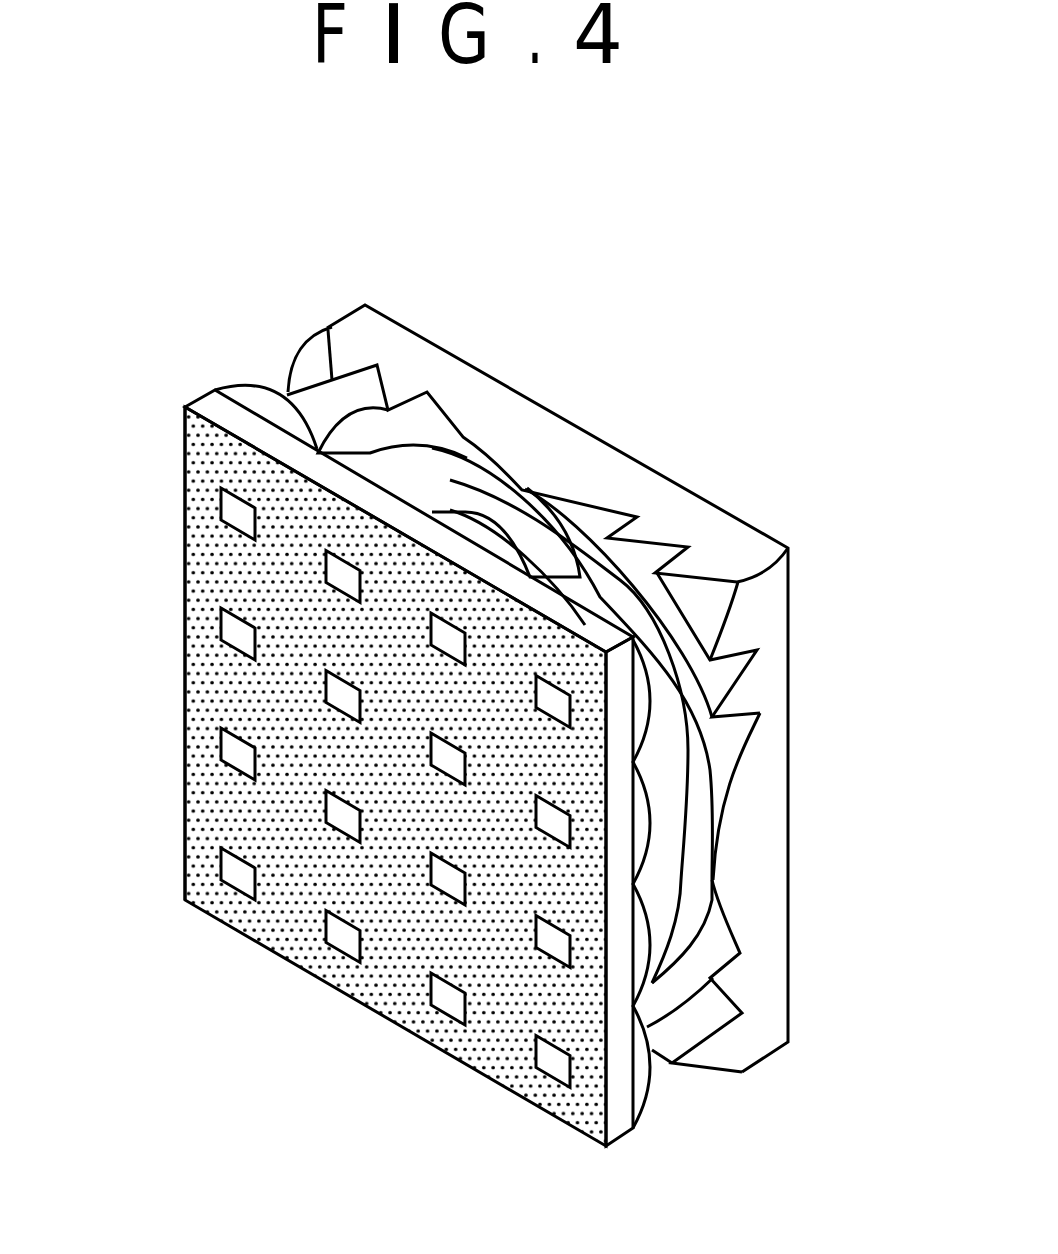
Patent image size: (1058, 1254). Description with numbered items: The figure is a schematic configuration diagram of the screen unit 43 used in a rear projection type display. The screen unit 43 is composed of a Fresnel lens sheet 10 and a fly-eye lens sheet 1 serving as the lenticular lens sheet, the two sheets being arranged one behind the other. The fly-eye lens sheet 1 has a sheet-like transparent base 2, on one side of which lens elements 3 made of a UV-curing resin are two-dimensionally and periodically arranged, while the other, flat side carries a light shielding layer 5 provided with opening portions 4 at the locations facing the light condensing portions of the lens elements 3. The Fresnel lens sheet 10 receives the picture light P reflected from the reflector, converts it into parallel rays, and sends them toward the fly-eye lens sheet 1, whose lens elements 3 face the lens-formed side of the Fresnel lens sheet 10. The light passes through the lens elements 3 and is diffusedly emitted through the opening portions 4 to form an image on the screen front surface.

The fly-eye lens sheet 1 is at (183, 537).
The transparent base 2 is at (205, 393).
The lens elements 3 is at (262, 390).
The opening portions 4 is at (338, 933).
The light shielding layer 5 is at (495, 1042).
The Fresnel lens sheet 10 is at (345, 305).
The picture light P is at (720, 435).
The screen unit 43 is at (793, 1168).